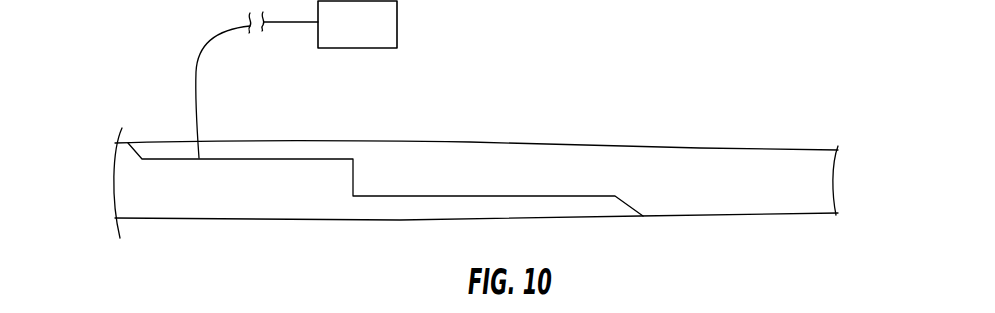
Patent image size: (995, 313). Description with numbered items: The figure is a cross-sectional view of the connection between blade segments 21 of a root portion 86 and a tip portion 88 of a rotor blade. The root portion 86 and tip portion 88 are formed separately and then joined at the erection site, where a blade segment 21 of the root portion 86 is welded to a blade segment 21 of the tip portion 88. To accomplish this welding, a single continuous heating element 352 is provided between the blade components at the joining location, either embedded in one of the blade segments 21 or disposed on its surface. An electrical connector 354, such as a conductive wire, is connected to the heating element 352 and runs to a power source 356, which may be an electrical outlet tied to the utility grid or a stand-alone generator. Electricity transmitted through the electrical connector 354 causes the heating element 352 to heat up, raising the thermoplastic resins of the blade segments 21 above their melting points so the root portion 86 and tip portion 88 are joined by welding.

The blade segment 21 is at (697, 157).
The root portion 86 is at (124, 201).
The tip portion 88 is at (784, 160).
The heating element 352 is at (390, 195).
The electrical connector 354 is at (200, 72).
The power source 356 is at (372, 34).